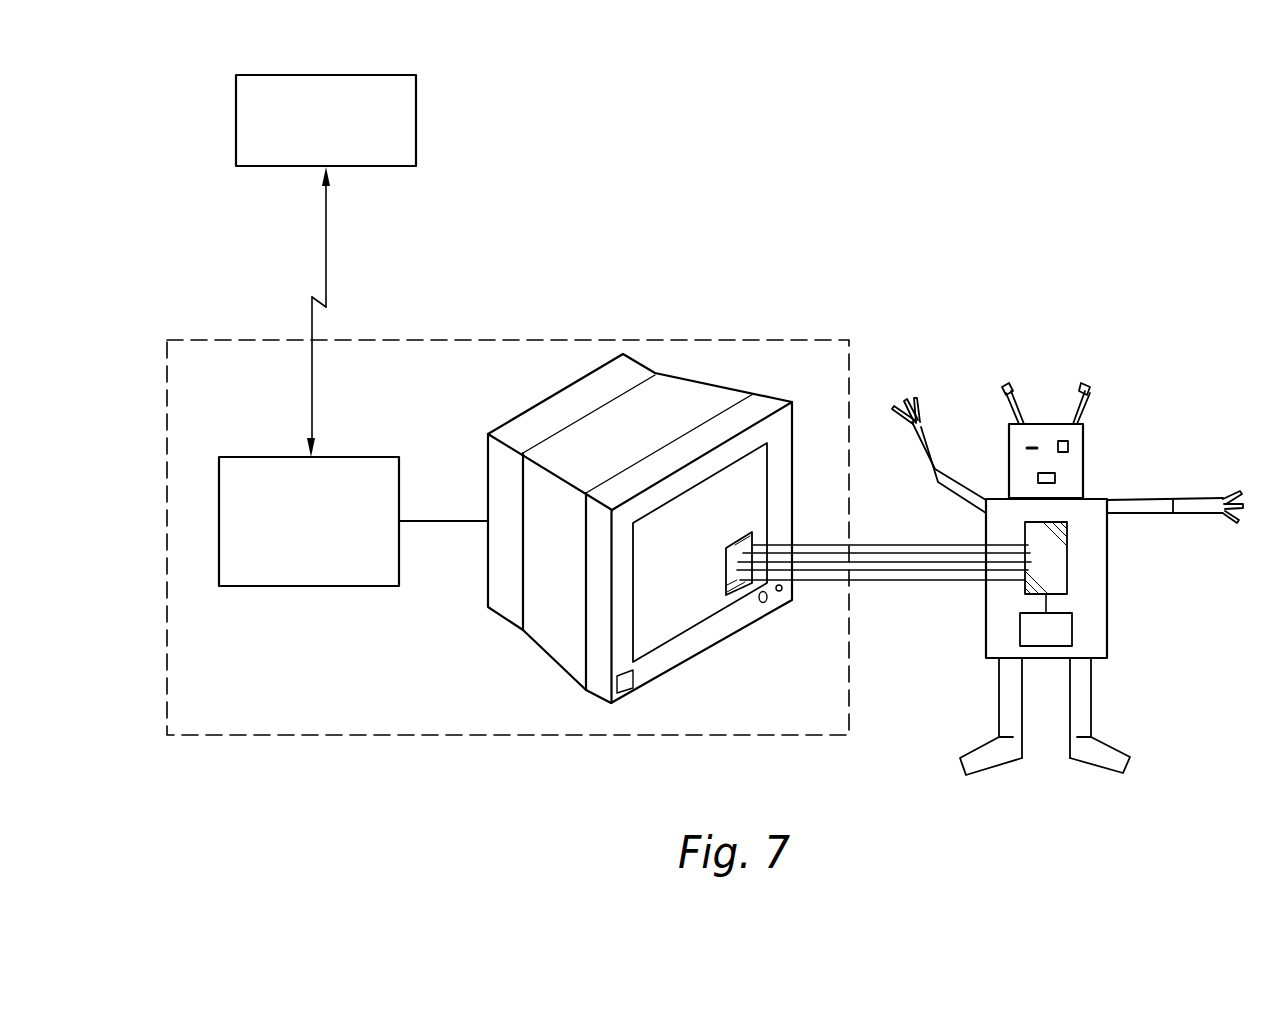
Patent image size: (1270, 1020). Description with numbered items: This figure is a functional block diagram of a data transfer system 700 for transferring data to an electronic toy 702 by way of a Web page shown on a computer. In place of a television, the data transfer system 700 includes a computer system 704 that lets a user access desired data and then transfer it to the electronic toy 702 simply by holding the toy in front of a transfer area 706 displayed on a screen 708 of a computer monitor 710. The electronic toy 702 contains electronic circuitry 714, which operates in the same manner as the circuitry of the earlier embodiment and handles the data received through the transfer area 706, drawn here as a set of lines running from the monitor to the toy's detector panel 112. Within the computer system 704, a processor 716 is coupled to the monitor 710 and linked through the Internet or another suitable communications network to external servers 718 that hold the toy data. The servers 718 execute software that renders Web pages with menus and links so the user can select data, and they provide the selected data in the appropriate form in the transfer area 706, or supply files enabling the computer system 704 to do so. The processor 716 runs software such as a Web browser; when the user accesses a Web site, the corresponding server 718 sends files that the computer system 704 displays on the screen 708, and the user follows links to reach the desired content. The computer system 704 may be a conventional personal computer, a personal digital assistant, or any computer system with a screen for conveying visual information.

The data transfer system 700 is at (801, 178).
The electronic toy 702 is at (1123, 395).
The computer system 704 is at (767, 340).
The transfer area 706 is at (736, 583).
The screen 708 is at (667, 610).
The computer monitor 710 is at (542, 648).
The electronic circuitry 714 is at (1061, 642).
The processor 716 is at (362, 456).
The servers 718 is at (416, 127).
The robot optical receiver panel 112 is at (1060, 563).